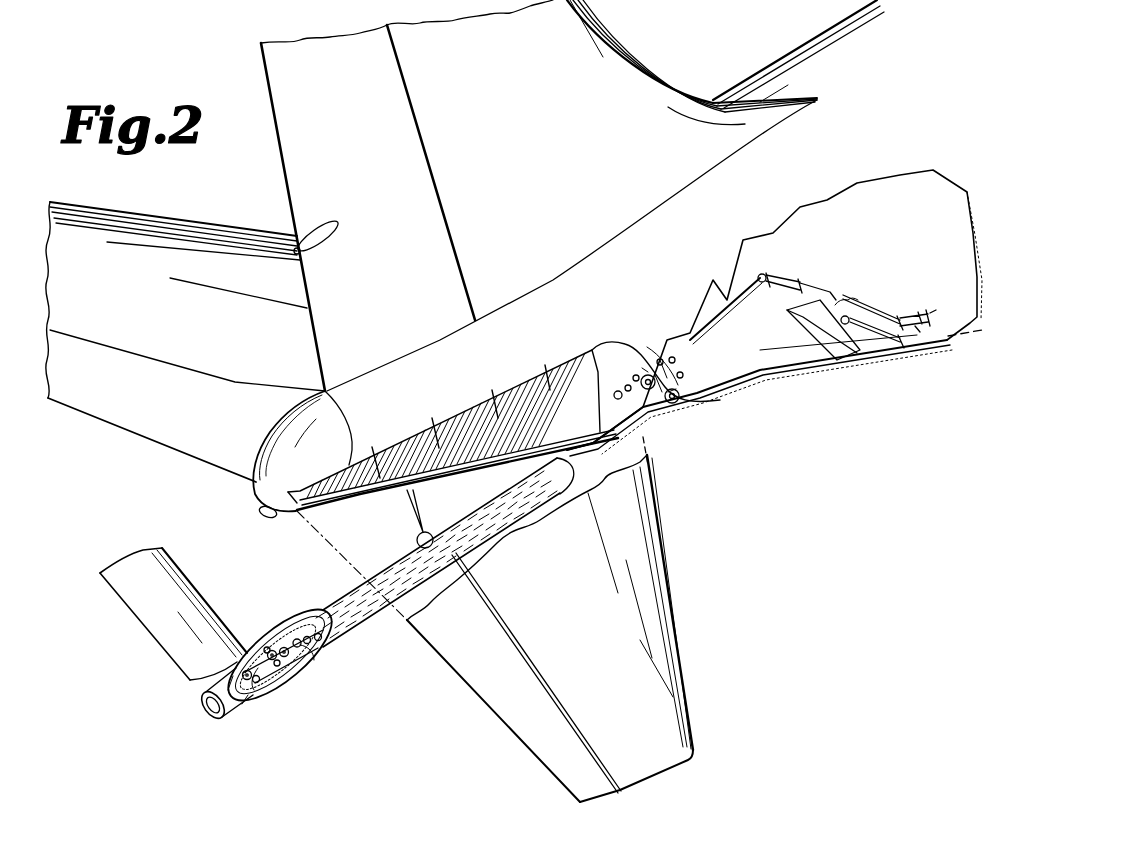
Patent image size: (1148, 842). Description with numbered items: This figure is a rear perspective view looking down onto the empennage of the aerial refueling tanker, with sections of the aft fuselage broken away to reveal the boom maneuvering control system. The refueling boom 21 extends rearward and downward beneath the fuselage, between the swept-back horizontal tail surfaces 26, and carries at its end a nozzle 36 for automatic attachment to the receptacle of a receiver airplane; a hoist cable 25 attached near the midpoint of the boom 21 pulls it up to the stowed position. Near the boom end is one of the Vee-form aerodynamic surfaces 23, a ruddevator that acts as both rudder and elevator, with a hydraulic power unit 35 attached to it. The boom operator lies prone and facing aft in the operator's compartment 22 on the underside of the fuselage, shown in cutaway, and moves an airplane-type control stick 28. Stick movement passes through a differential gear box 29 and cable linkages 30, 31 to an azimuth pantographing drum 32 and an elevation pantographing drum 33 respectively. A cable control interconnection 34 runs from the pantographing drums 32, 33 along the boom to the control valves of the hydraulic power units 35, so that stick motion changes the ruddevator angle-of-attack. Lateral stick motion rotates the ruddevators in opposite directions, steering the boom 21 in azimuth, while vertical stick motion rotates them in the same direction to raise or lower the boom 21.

The boom 21 is at (337, 592).
The operator's compartment 22 is at (884, 240).
The aerodynamic surface 23 is at (180, 580).
The hoist cable 25 is at (416, 538).
The horizontal tail surfaces 26 is at (198, 327).
The control stick 28 is at (870, 308).
The differential gear box 29 is at (910, 308).
The cable linkage 30 is at (775, 357).
The cable linkage 31 is at (758, 279).
The azimuth pantographing drum 32 is at (650, 347).
The elevation pantographing drum 33 is at (640, 355).
The cable control interconnection 34 is at (510, 517).
The hydraulic power unit 35 is at (312, 673).
The nozzle 36 is at (205, 714).